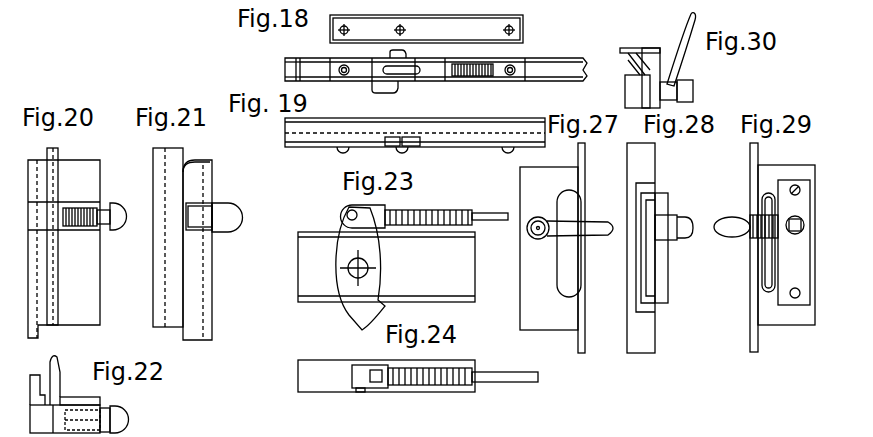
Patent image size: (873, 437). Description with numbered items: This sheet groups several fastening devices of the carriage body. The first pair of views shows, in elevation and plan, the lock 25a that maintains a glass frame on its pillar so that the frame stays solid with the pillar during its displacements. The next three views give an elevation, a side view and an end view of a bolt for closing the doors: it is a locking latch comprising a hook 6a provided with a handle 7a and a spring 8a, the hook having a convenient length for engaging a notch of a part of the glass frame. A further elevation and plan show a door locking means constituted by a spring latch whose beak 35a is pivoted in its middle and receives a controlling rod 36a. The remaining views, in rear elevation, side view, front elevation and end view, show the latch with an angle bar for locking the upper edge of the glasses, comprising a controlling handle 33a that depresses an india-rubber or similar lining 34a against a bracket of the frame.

In FIG. 22, the hook 6a is at (35, 380).
In FIG. 20, the handle 7a is at (116, 226).
In FIG. 21, the handle 7a is at (226, 209).
In FIG. 22, the handle 7a is at (124, 420).
In FIG. 20, the spring 8a is at (88, 210).
In FIG. 19, the lock 25a is at (405, 146).
In FIG. 27, the controlling handle 33a is at (597, 227).
In FIG. 30, the controlling handle 33a is at (681, 27).
In FIG. 29, the lining 34a is at (768, 277).
In FIG. 23, the beak 35a is at (354, 324).
In FIG. 23, the controlling rod 36a is at (496, 220).
In FIG. 24, the controlling rod 36a is at (523, 373).